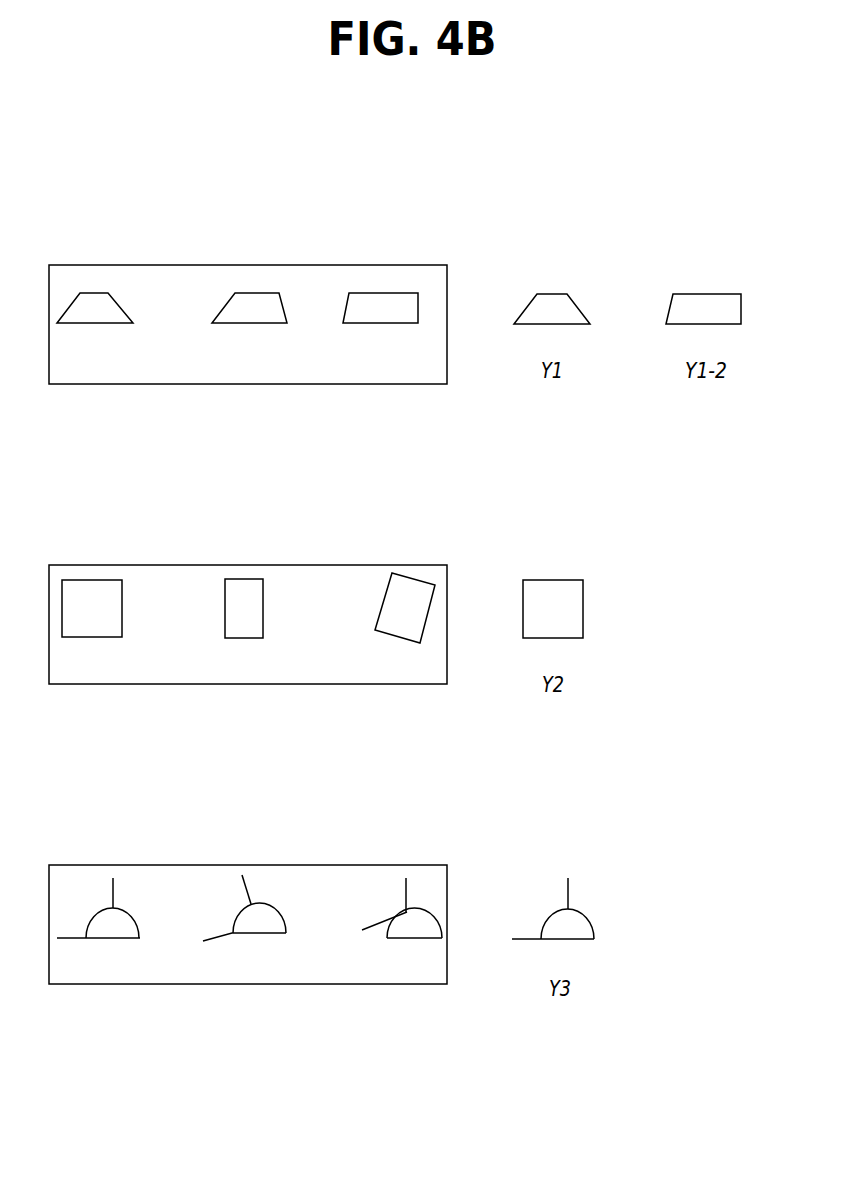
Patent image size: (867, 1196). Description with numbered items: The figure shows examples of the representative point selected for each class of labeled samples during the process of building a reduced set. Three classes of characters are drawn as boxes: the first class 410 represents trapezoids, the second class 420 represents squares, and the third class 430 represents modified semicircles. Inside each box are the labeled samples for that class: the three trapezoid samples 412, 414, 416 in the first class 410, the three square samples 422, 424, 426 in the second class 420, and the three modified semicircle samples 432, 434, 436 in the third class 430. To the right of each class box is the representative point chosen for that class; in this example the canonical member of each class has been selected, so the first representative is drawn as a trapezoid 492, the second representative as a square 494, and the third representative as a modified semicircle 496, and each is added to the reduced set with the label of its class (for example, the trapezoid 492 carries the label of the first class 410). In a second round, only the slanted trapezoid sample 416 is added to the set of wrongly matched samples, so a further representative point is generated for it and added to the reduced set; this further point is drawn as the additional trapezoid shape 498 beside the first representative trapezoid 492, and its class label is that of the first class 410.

The Class 1 410 is at (248, 354).
The sample 412 is at (95, 330).
The sample 414 is at (249, 330).
The sample 416 is at (380, 330).
The Class 2 420 is at (248, 657).
The sample 422 is at (92, 623).
The sample 424 is at (246, 623).
The sample 426 is at (405, 620).
The Class 3 430 is at (248, 955).
The sample 432 is at (98, 922).
The sample 434 is at (244, 921).
The sample 436 is at (402, 922).
The trapezoid 492 is at (552, 324).
The square 494 is at (553, 624).
The modified semicircle 496 is at (553, 925).
The test shape classified Y1-2 498 is at (703, 324).